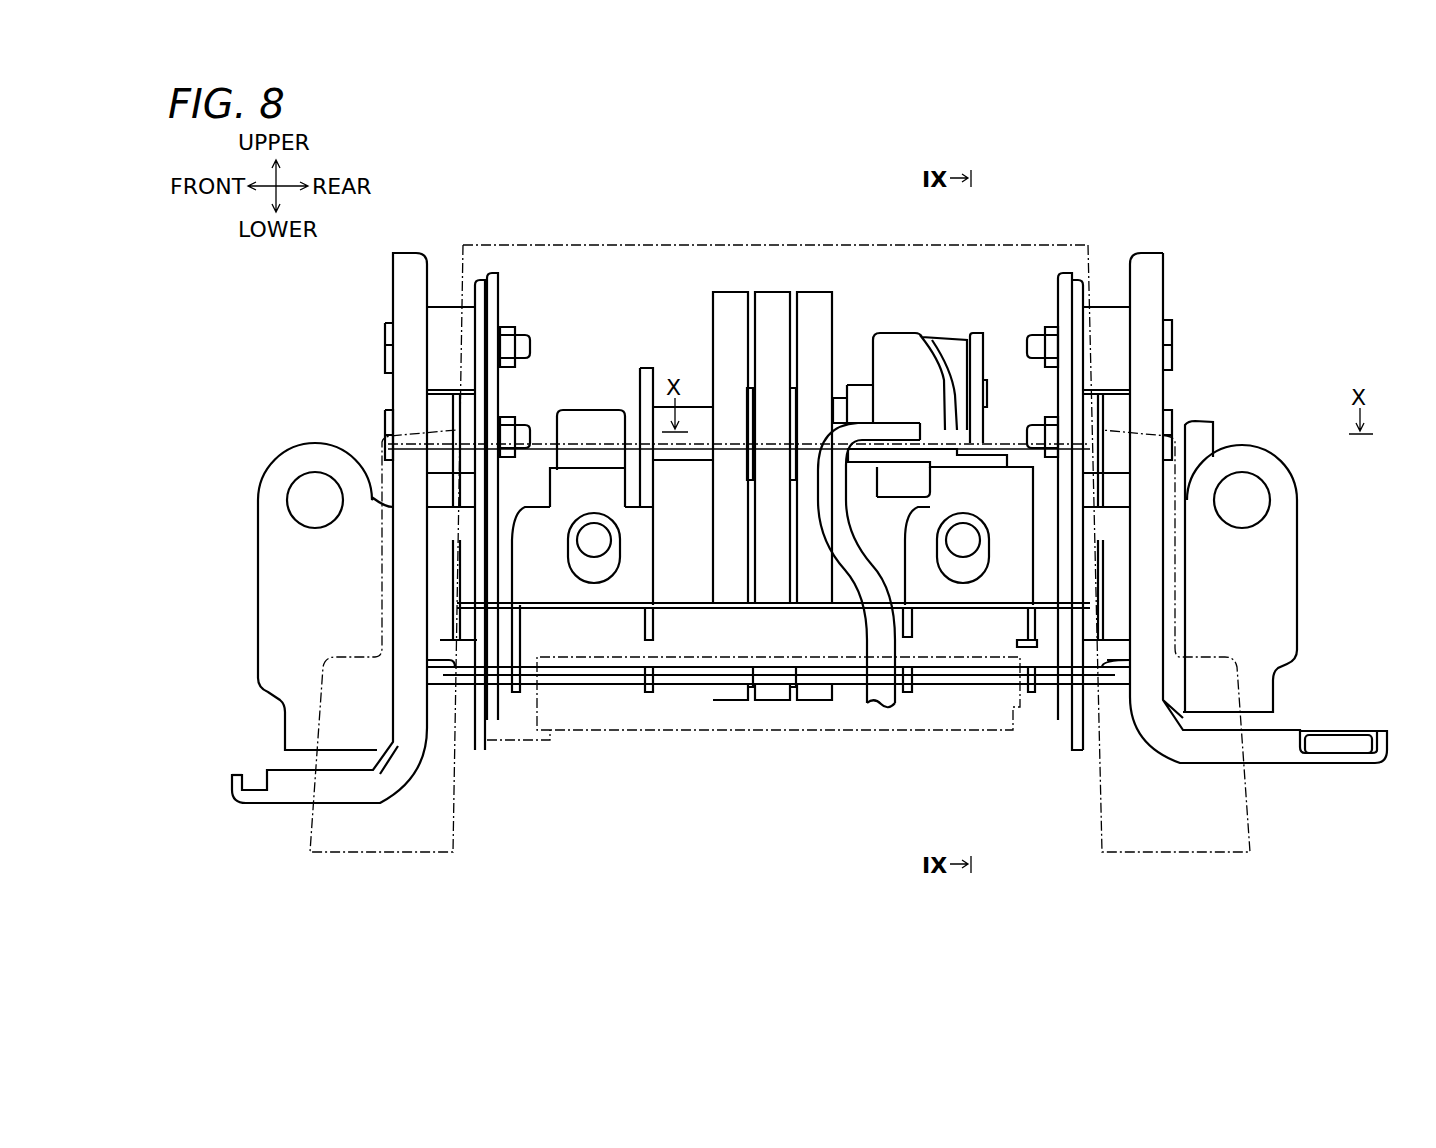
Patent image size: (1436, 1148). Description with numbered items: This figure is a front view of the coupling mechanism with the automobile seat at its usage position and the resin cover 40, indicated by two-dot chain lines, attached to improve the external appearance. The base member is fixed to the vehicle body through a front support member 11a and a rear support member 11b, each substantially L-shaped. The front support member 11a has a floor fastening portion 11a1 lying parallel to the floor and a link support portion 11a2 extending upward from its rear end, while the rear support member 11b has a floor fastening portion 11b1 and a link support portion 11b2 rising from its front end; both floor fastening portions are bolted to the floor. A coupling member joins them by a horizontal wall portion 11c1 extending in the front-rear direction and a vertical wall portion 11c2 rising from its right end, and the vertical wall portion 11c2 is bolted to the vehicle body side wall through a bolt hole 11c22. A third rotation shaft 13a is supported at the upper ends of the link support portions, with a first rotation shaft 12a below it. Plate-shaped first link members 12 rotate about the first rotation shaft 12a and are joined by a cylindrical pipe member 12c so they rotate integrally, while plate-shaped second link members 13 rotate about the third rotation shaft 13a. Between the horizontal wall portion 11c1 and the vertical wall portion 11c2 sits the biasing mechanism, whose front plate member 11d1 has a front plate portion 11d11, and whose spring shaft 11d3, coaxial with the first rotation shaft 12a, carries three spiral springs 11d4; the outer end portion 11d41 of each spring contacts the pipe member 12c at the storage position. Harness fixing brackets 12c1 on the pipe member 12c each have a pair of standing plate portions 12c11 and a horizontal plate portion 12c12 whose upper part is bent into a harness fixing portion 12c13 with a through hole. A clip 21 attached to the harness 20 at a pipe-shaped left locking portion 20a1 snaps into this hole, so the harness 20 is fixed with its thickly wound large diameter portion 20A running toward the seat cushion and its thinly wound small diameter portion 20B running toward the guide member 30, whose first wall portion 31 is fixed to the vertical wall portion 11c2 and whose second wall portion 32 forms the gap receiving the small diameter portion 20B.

The front support member 11a is at (338, 569).
The floor fastening portion 11a1 is at (288, 805).
The link support portion 11a2 is at (388, 390).
The rear support member 11b is at (1256, 538).
The floor fastening portion 11b1 is at (1342, 765).
The link support portion 11b2 is at (1175, 404).
The horizontal wall portion 11c1 is at (688, 685).
The vertical wall portion 11c2 is at (783, 596).
The bolt hole 11c22 is at (317, 478).
The front plate member 11d1 is at (647, 442).
The front plate portion 11d11 is at (640, 373).
The spring shaft 11d3 is at (697, 407).
The spiral springs 11d4 is at (772, 477).
The outer end portion 11d41 is at (815, 702).
The first link member 12 is at (807, 492).
The first rotation shaft 12a is at (478, 402).
The pipe member 12c is at (778, 705).
The harness fixing bracket 12c1 is at (575, 595).
The standing plate portions 12c11 is at (530, 692).
The horizontal plate portion 12c12 is at (891, 553).
The harness fixing portion 12c13 is at (590, 468).
The second link member 13 is at (778, 475).
The third rotation shaft 13a is at (520, 340).
The harness 20 is at (916, 509).
The large diameter portion 20A is at (862, 645).
The small diameter portion 20B is at (924, 342).
The left locking portion 20a1 is at (895, 420).
The clip 21 is at (1000, 445).
The guide member 30 is at (985, 323).
The first wall portion 31 is at (976, 333).
The second wall portion 32 is at (893, 332).
The cover 40 is at (829, 245).